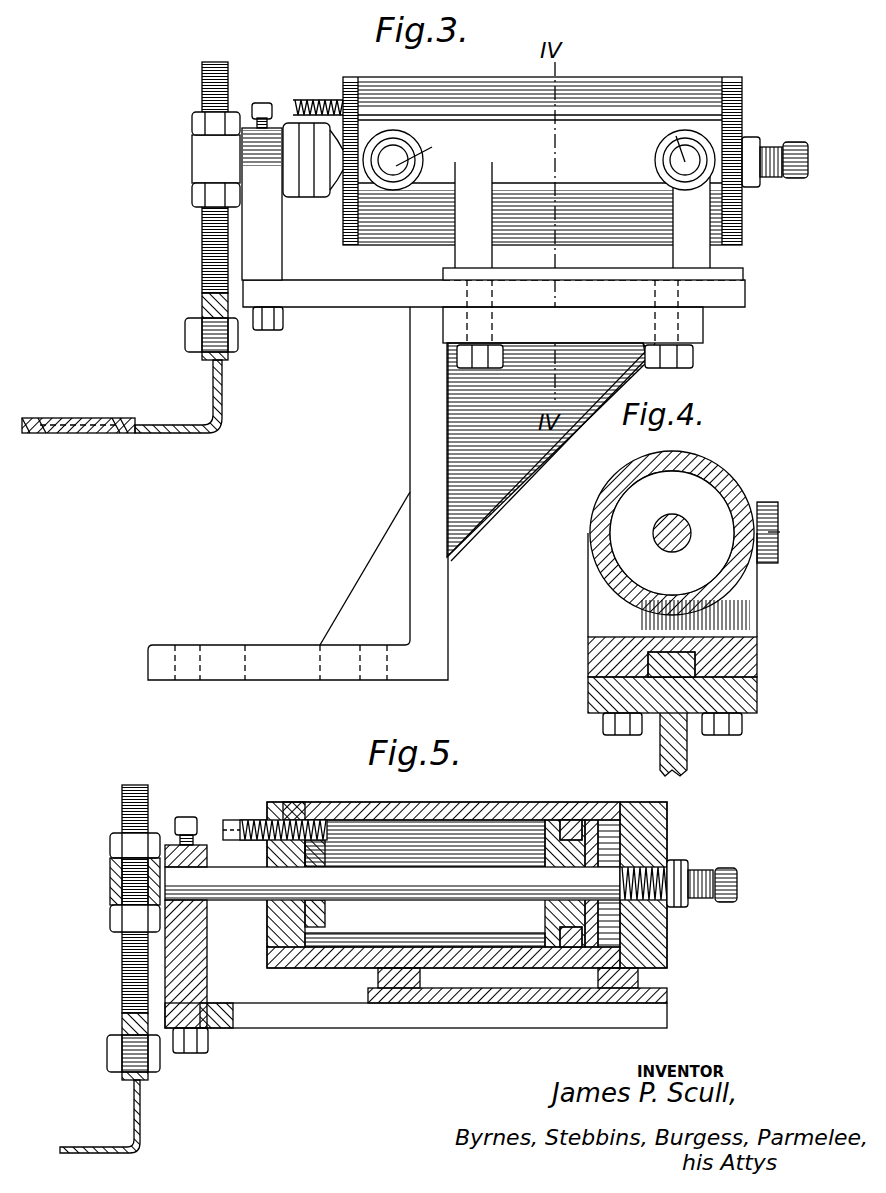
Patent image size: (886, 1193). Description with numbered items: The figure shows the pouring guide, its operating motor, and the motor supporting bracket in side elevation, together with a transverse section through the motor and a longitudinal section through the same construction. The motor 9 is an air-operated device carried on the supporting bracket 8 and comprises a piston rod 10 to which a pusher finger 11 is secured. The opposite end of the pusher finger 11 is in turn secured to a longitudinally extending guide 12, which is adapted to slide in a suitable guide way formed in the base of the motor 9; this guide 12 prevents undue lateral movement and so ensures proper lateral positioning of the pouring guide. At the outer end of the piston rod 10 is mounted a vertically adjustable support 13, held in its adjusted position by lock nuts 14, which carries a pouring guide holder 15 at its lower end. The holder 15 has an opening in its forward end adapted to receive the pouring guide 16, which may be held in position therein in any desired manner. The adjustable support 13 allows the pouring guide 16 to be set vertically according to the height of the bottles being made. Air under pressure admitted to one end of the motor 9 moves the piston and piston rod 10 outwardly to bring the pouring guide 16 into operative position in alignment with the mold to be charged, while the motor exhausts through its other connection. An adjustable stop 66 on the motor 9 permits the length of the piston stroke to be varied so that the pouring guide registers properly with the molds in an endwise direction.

In FIG. 3, the bracket 8 is at (418, 436).
In FIG. 4, the bracket 8 is at (668, 758).
In FIG. 3, the motor 9 is at (545, 178).
In FIG. 4, the motor 9 is at (726, 489).
In FIG. 5, the motor 9 is at (452, 806).
In FIG. 3, the piston rod 10 is at (240, 157).
In FIG. 4, the piston rod 10 is at (674, 520).
In FIG. 5, the piston rod 10 is at (513, 888).
In FIG. 3, the pusher finger 11 is at (272, 247).
In FIG. 5, the pusher finger 11 is at (218, 966).
In FIG. 3, the guide 12 is at (363, 292).
In FIG. 4, the guide 12 is at (655, 658).
In FIG. 5, the guide 12 is at (416, 1028).
In FIG. 3, the vertically adjustable support 13 is at (202, 250).
In FIG. 5, the vertically adjustable support 13 is at (122, 965).
In FIG. 3, the lock nuts 14 is at (192, 124).
In FIG. 5, the lock nuts 14 is at (110, 843).
In FIG. 3, the pouring guide holder 15 is at (213, 407).
In FIG. 5, the pouring guide holder 15 is at (133, 1122).
In FIG. 3, the pouring guide 16 is at (95, 416).
In FIG. 3, the adjustable stop 66 is at (323, 100).
In FIG. 5, the adjustable stop 66 is at (255, 821).